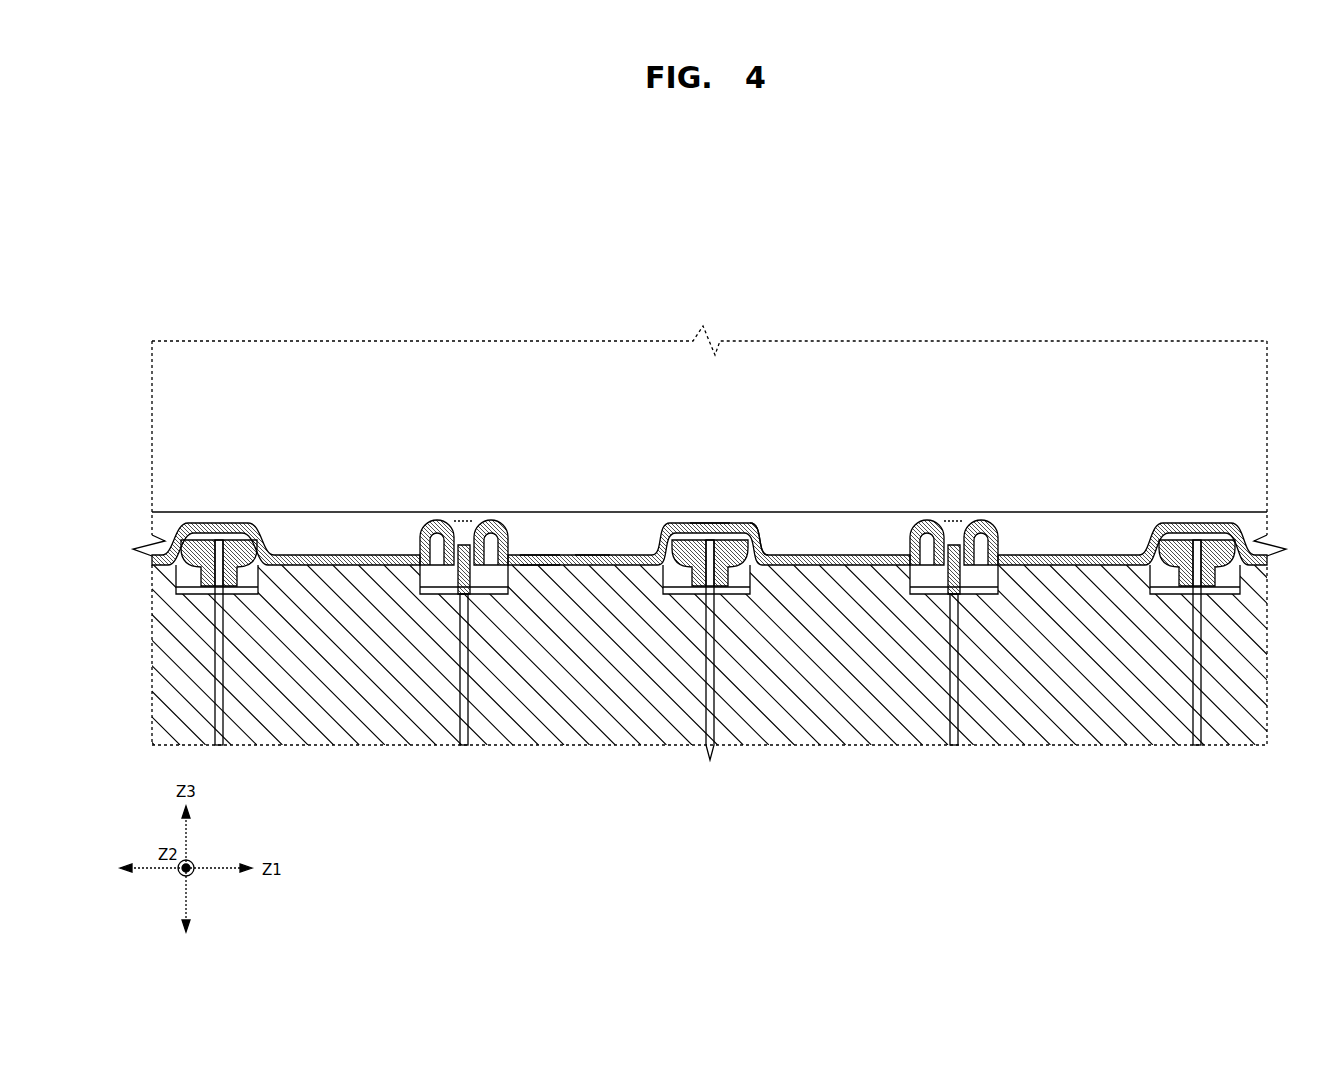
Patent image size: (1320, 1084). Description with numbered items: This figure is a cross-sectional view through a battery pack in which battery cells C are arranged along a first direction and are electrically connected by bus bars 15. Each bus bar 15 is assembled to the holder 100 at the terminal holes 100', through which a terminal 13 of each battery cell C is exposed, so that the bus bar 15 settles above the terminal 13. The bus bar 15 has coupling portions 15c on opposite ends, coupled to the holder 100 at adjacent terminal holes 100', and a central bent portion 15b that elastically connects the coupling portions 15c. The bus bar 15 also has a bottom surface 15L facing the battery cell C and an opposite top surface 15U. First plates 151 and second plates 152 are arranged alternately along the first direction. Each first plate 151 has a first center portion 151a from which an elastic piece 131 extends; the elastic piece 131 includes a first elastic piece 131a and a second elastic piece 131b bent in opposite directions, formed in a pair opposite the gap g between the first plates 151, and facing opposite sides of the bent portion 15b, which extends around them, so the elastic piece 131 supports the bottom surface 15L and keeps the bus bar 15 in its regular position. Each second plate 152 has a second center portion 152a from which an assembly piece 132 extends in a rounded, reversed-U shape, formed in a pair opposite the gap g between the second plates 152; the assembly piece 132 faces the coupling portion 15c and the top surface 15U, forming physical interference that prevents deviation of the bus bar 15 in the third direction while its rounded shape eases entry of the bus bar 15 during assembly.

The holder 100 is at (709, 441).
The terminal hole 100' is at (709, 488).
The terminal 13 is at (660, 695).
The battery cell C is at (1070, 720).
The bus bar 15 is at (709, 625).
The top surface 15U is at (535, 555).
The bottom surface 15L is at (533, 566).
The coupling portion 15c is at (592, 555).
The bent portion 15b is at (706, 523).
The elastic piece 131 is at (709, 496).
The first elastic piece 131a is at (680, 524).
The second elastic piece 131b is at (740, 524).
The assembly piece 132 is at (438, 520).
The first plate 151 is at (708, 697).
The first center portion 151a is at (670, 590).
The second plate 152 is at (708, 709).
The second center portion 152a is at (428, 592).
The gap g is at (462, 594).